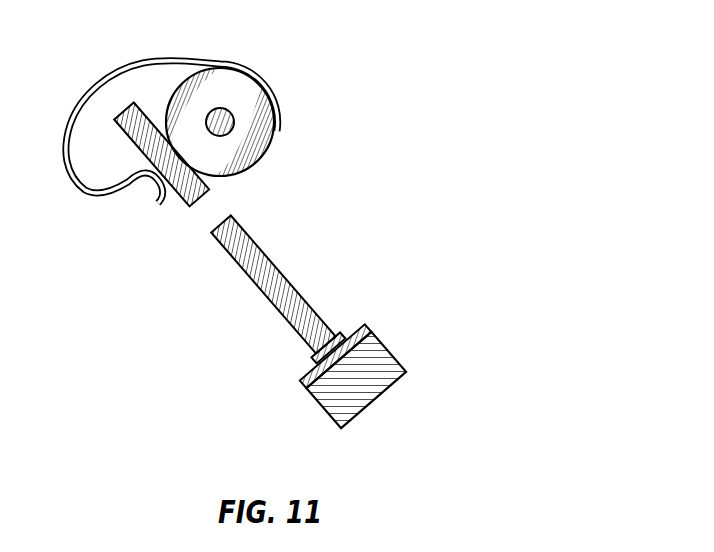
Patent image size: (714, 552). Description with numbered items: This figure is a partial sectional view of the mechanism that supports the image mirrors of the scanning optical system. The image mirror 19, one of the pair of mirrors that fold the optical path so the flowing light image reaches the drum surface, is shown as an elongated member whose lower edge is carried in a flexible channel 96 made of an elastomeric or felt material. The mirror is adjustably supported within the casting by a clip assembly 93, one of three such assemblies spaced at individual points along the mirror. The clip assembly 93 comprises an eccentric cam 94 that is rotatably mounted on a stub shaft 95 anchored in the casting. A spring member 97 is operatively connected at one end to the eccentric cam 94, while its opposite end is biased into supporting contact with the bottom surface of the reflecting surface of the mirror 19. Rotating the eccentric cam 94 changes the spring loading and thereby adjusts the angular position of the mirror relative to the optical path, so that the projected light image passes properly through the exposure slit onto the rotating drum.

The clip assembly 93 is at (288, 31).
The eccentric cam 94 is at (262, 132).
The stub shaft 95 is at (213, 116).
The flexible channel 96 is at (347, 342).
The spring member 97 is at (67, 142).
The image mirror 19 is at (270, 260).